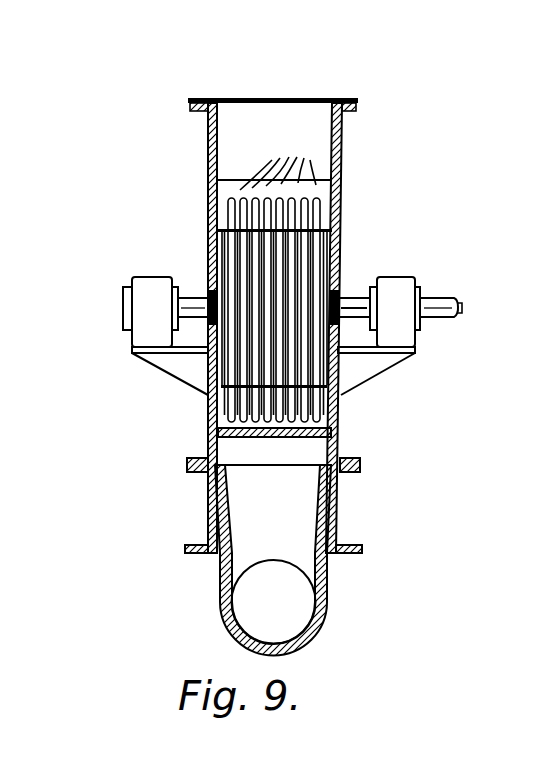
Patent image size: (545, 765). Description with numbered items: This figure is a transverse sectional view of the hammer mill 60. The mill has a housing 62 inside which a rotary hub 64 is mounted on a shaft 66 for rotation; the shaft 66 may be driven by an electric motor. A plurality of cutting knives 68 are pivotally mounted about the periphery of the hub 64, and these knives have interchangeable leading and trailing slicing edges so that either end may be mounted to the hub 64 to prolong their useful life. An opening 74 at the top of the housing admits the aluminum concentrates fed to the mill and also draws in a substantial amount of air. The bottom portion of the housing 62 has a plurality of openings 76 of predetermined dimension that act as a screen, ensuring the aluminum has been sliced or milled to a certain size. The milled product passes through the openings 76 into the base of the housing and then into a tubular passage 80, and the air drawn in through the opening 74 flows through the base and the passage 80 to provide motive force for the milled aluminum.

The hammer mill 60 is at (395, 91).
The housing 62 is at (342, 155).
The rotary hub 64 is at (220, 234).
The shaft 66 is at (441, 318).
The cutting knives 68 is at (278, 161).
The opening 74 is at (243, 108).
The openings 76 is at (250, 438).
The tubular passage 80 is at (307, 602).